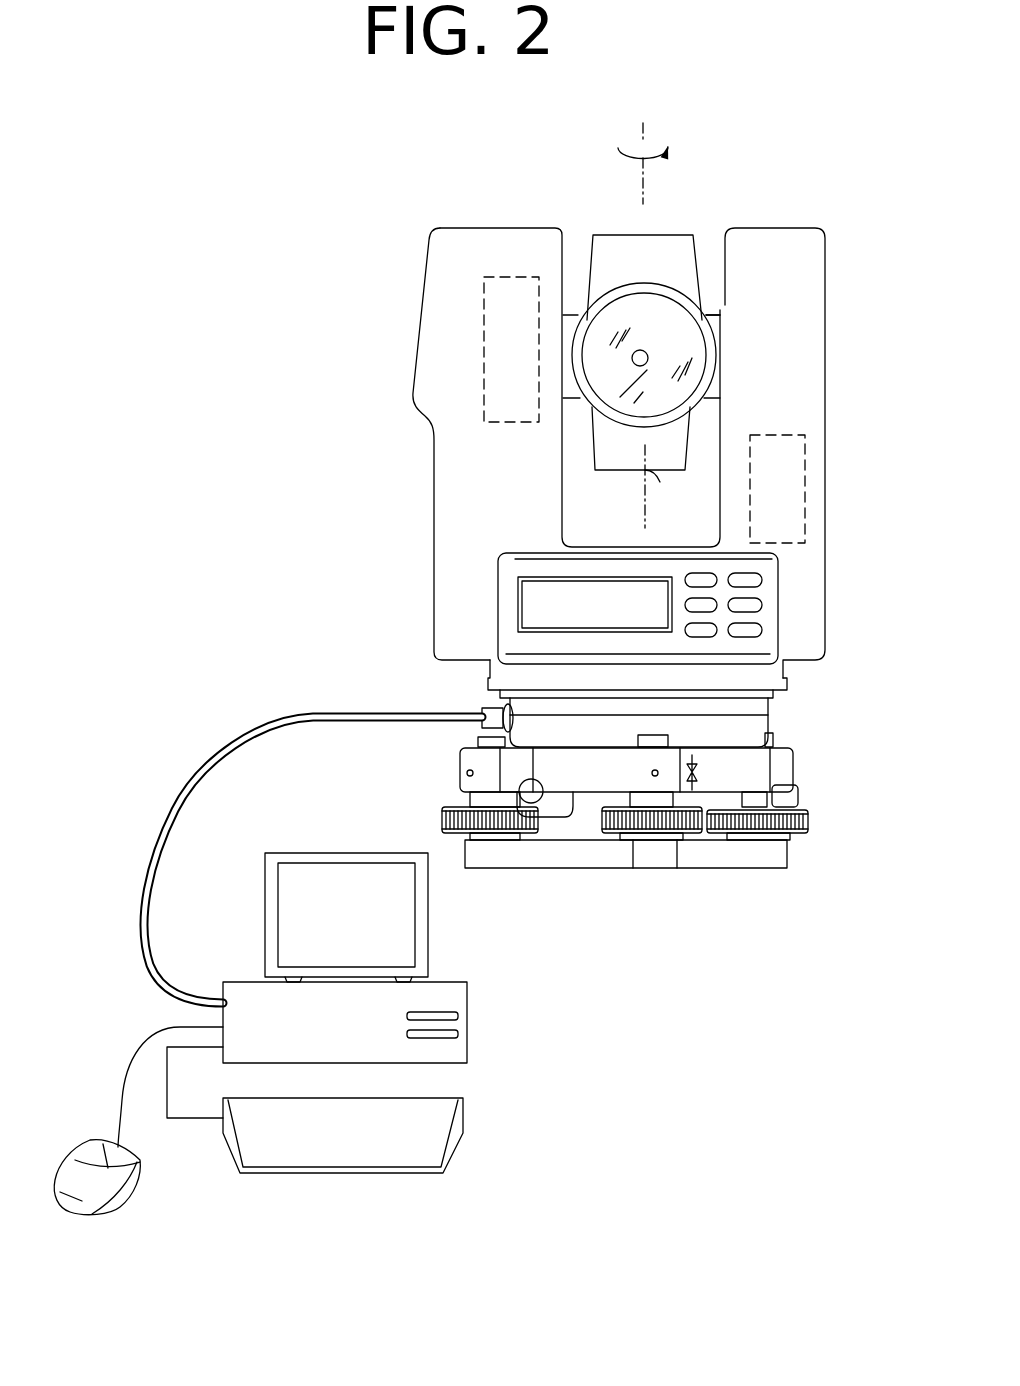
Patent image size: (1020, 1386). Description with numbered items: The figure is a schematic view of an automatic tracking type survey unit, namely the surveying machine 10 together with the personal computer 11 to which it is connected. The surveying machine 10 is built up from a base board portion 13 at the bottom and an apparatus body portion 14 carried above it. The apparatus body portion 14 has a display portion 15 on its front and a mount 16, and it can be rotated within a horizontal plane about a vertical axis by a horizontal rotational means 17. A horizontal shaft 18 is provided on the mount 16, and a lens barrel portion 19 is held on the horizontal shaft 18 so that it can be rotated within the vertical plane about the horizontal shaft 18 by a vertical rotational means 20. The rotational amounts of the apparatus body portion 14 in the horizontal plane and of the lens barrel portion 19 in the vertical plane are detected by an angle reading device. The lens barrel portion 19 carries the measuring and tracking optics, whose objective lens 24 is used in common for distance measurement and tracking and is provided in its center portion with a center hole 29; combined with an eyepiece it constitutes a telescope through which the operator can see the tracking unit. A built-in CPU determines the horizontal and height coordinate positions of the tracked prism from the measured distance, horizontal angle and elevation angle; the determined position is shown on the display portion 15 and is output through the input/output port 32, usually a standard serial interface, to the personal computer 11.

The surveying machine 10 is at (780, 221).
The personal computer 11 is at (445, 967).
The base board portion 13 is at (801, 764).
The apparatus body portion 14 is at (831, 600).
The display portion 15 is at (535, 598).
The mount 16 is at (428, 393).
The horizontal rotational means 17 is at (807, 480).
The horizontal shaft 18 is at (722, 312).
The lens barrel portion 19 is at (682, 244).
The vertical rotational means 20 is at (484, 290).
The objective lens 24 is at (613, 313).
The center hole 29 is at (637, 367).
The input/output port 32 is at (480, 704).